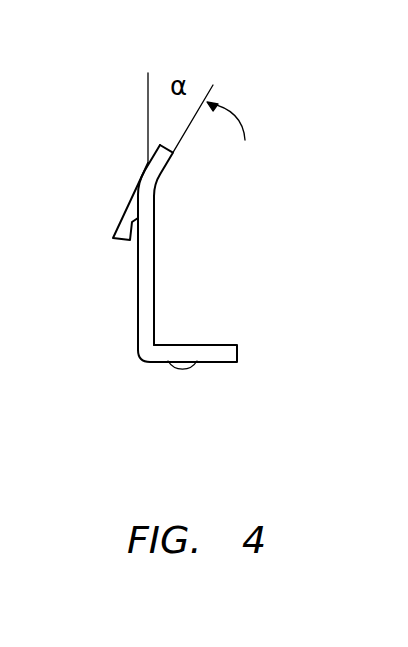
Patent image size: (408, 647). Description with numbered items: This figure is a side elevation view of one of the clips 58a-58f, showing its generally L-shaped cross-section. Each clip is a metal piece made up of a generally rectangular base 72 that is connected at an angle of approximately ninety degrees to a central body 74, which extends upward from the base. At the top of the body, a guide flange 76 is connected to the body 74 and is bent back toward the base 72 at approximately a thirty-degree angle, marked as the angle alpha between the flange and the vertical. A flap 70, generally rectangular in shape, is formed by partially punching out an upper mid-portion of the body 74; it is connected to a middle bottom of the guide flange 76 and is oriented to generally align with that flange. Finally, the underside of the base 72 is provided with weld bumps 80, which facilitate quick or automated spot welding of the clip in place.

The clips 58a-58f is at (313, 108).
The flap 70 is at (111, 210).
The base 72 is at (192, 343).
The central body 74 is at (142, 303).
The guide flange 76 is at (150, 164).
The weld bumps 80 is at (183, 368).